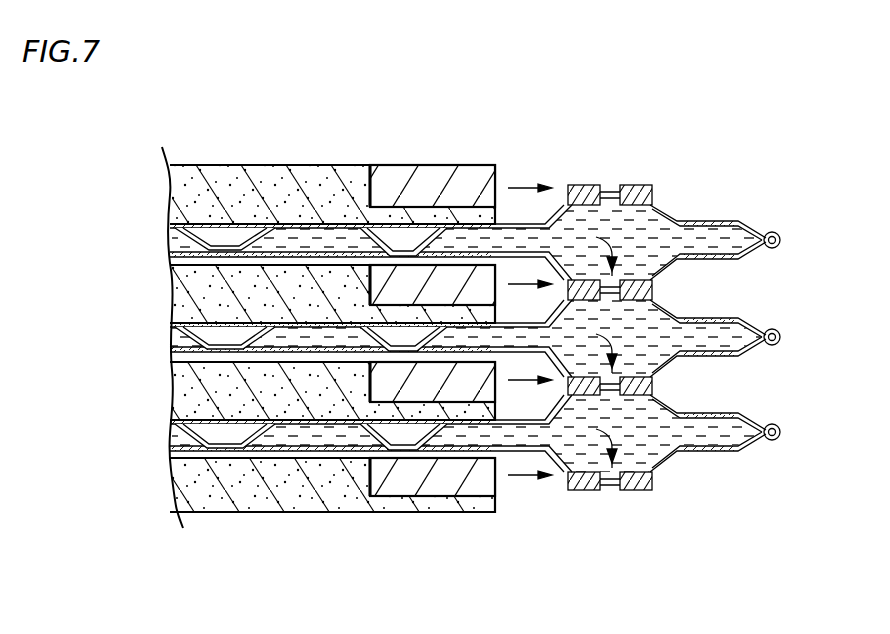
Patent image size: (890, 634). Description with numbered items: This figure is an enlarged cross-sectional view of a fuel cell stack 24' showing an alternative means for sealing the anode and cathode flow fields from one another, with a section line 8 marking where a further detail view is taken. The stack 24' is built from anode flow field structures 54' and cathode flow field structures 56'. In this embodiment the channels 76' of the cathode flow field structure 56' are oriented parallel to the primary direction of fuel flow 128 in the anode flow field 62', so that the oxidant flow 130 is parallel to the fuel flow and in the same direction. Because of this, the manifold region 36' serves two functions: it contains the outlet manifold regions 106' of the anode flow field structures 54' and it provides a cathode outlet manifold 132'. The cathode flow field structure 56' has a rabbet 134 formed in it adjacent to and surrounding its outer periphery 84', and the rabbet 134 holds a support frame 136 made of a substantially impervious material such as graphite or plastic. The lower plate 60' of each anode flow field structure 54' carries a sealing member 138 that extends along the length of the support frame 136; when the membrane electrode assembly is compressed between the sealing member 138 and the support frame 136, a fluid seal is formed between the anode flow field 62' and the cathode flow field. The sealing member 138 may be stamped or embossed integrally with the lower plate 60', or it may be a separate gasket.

The section line 8- 8 is at (520, 97).
The fuel cell stack 24' is at (467, 242).
The manifold region 36' is at (602, 477).
The anode flow field structure 54' is at (739, 198).
The cathode flow field structure 56' is at (270, 337).
The lower plate 60' is at (746, 398).
The anode flow field 62' is at (270, 319).
The channels 76' is at (293, 487).
The outer periphery 84' is at (472, 259).
The outlet manifold region 106' is at (736, 338).
The primary direction of fuel flow 128 is at (612, 228).
The oxidant flow 130 is at (518, 478).
The cathode outlet manifold 132' is at (544, 395).
The rabbet 134 is at (448, 490).
The support frame 136 is at (470, 487).
The sealing member 138 is at (378, 480).